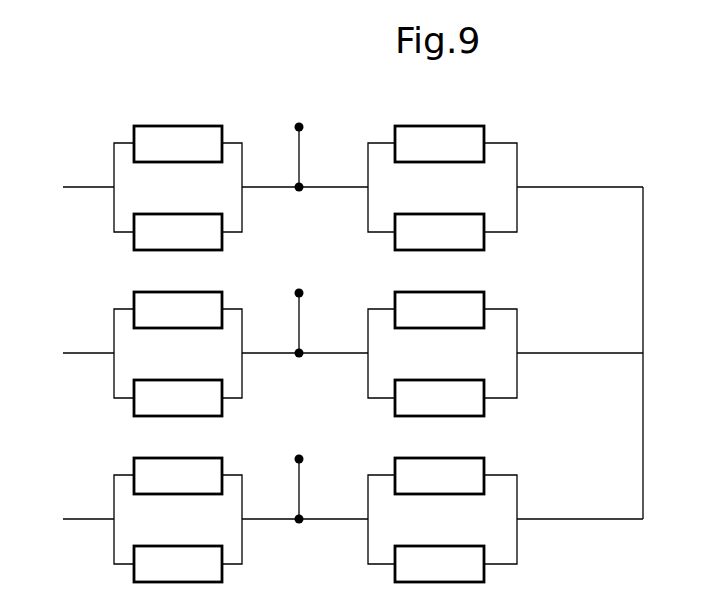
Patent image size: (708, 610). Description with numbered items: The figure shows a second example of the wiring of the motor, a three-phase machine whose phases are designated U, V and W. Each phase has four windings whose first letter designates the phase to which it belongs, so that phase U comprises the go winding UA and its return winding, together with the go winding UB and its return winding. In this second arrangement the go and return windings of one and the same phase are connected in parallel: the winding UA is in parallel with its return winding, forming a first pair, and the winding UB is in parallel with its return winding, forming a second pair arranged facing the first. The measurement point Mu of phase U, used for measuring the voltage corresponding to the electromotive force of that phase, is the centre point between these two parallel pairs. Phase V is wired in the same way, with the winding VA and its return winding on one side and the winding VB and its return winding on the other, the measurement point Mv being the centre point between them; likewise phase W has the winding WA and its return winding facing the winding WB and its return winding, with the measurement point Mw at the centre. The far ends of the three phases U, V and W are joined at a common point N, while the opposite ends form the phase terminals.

The phase U is at (77, 187).
The phase V is at (77, 353).
The phase W is at (75, 519).
The neutral point N is at (656, 353).
The measurement point of phase U Mu is at (302, 143).
The measurement point of phase V Mv is at (301, 309).
The measurement point of phase W Mw is at (302, 475).
The winding UA is at (176, 219).
The winding UB is at (439, 219).
The winding VA is at (176, 385).
The winding VB is at (439, 385).
The winding WA is at (176, 551).
The winding WB is at (439, 551).